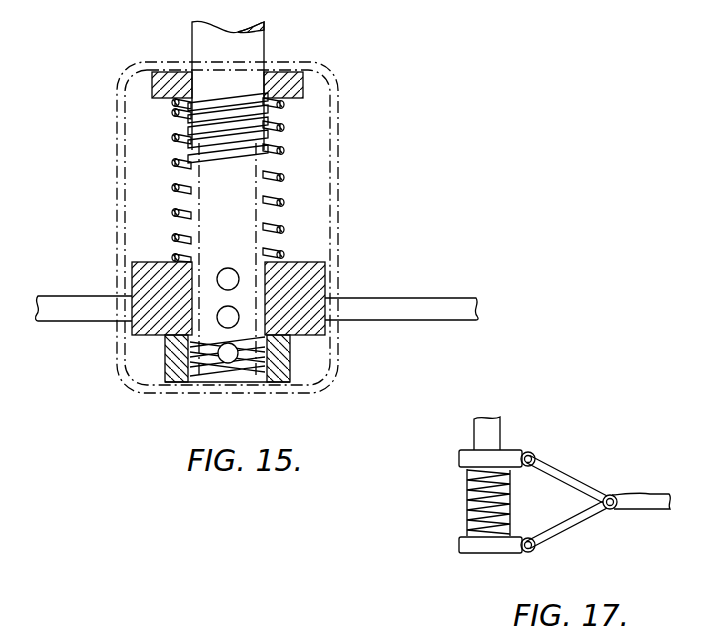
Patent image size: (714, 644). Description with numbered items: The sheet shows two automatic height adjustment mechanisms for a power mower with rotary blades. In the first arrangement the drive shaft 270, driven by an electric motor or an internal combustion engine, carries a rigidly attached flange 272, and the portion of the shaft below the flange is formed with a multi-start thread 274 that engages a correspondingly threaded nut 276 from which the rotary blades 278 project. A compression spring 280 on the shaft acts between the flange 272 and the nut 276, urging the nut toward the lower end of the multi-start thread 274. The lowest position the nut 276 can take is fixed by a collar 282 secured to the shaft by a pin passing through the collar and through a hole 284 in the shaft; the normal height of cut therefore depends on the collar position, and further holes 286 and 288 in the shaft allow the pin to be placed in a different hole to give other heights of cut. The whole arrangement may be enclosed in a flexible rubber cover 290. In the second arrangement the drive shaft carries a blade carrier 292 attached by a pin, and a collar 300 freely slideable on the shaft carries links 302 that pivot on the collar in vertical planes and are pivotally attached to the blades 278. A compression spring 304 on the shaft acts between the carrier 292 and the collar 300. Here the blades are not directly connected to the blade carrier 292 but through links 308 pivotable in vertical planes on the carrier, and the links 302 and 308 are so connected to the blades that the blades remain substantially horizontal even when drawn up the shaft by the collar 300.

In FIG. 15, the drive shaft 270 is at (264, 47).
In FIG. 15, the flange 272 is at (162, 78).
In FIG. 15, the multi-start thread 274 is at (195, 170).
In FIG. 15, the nut 276 is at (320, 278).
In FIG. 15, the rotary blades 278 is at (435, 305).
In FIG. 17, the rotary blades 278 is at (652, 488).
In FIG. 15, the compression spring 280 is at (282, 200).
In FIG. 15, the collar 282 is at (277, 377).
In FIG. 15, the hole 284 is at (222, 360).
In FIG. 15, the hole 286 is at (217, 318).
In FIG. 15, the hole 288 is at (228, 268).
In FIG. 15, the flexible rubber cover 290 is at (335, 241).
In FIG. 17, the blade carrier 292 is at (470, 548).
In FIG. 17, the collar 300 is at (459, 458).
In FIG. 17, the links 302 is at (575, 482).
In FIG. 17, the compression spring 304 is at (468, 515).
In FIG. 17, the links 308 is at (582, 520).